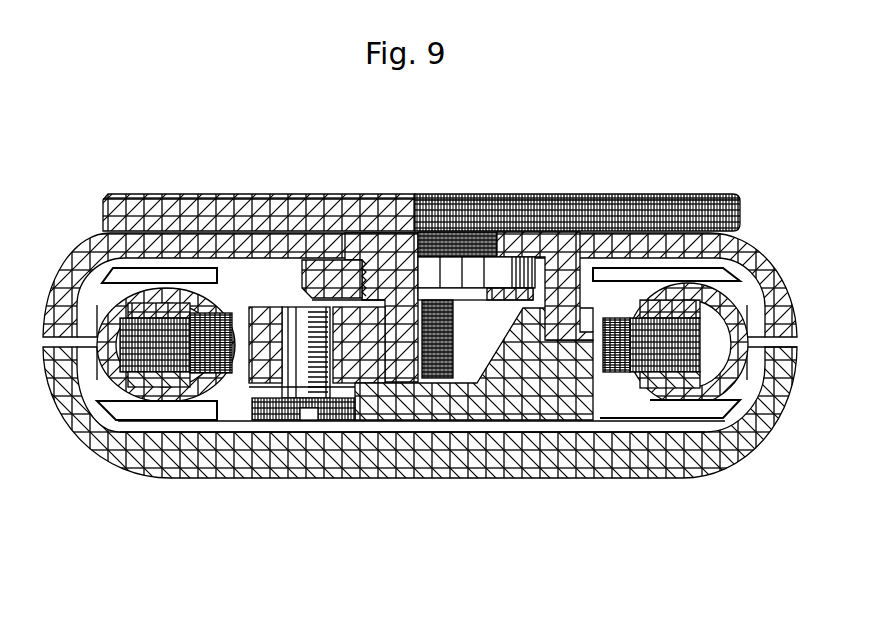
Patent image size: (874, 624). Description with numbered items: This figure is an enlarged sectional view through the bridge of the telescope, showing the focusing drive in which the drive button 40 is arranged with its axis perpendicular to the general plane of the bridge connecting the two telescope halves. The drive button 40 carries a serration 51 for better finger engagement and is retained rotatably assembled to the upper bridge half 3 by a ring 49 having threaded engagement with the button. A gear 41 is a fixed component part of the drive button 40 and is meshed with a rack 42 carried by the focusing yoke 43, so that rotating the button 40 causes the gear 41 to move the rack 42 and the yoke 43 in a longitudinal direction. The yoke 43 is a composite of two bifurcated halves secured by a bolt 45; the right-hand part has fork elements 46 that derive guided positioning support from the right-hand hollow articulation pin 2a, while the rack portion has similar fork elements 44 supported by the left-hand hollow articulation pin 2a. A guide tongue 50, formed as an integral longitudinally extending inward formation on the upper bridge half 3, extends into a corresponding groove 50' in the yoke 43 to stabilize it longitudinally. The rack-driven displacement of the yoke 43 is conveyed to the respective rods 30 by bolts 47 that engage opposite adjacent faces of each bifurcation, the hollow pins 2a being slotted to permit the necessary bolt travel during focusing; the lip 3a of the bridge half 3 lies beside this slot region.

The hollow articulation pin 2a is at (103, 320).
The upper bridge half 3 is at (785, 297).
The housing slot lip 3a is at (790, 363).
The rod 30 is at (117, 370).
The drive button 40 is at (435, 193).
The gear 41 is at (455, 330).
The rack 42 is at (260, 313).
The focusing yoke 43 is at (508, 407).
The fork elements 44 is at (152, 413).
The bolt 45 is at (332, 413).
The fork elements 46 is at (710, 410).
The bolt 47 is at (226, 357).
The ring 49 is at (517, 257).
The guide tongue 50 is at (527, 240).
The groove 50' is at (608, 306).
The serration 51 is at (177, 196).